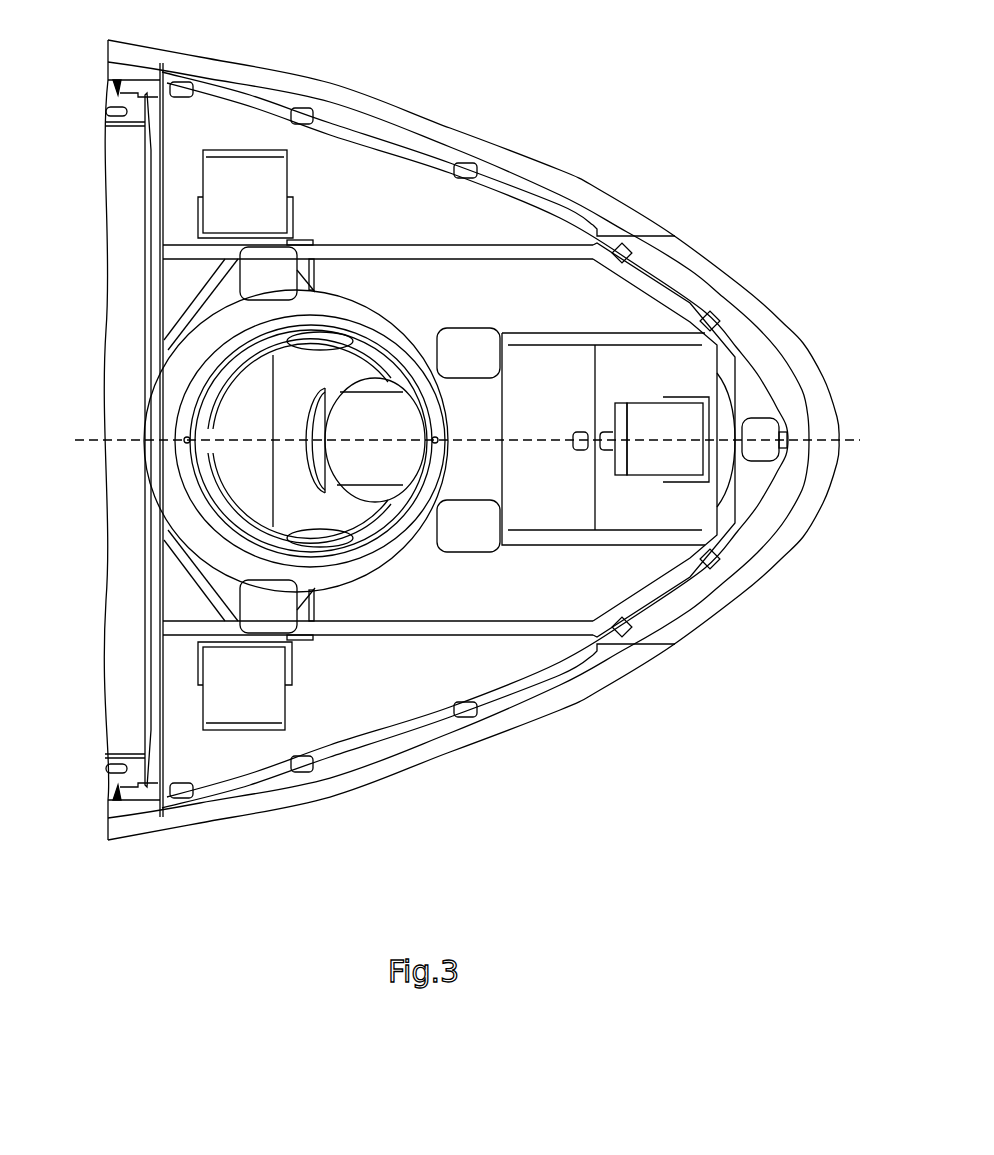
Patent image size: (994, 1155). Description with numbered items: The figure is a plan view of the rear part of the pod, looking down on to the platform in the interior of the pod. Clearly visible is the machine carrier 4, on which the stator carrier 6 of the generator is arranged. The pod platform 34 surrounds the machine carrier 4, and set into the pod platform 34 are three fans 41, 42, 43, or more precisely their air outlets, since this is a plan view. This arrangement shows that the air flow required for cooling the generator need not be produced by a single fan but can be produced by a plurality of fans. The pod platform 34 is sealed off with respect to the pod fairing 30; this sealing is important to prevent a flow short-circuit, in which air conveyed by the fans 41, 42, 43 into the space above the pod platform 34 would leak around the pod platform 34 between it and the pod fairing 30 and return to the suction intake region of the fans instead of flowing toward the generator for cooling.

The pod fairing 30 is at (588, 181).
The pod platform 34 is at (442, 172).
The stator carrier 6 is at (135, 190).
The machine carrier 4 is at (258, 474).
The fan 41 is at (672, 451).
The fan 42 is at (255, 204).
The fan 43 is at (258, 696).